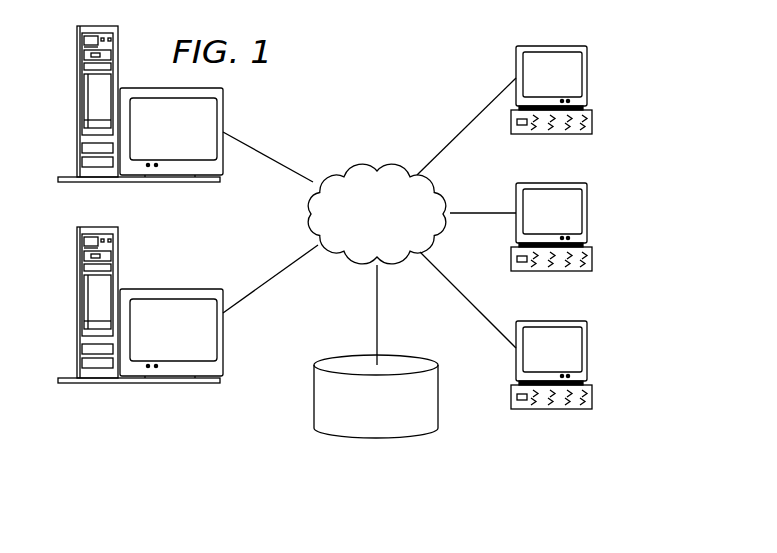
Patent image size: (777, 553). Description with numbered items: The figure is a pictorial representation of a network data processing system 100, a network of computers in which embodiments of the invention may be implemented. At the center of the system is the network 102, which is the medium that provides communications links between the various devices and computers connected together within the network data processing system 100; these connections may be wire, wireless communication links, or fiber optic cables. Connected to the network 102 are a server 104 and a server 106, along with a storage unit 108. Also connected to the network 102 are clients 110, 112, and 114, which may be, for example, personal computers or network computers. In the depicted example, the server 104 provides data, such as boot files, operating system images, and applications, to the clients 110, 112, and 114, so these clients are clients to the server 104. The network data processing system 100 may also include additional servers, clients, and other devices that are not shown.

The network data processing system 100 is at (425, 62).
The network 102 is at (348, 167).
The server 104 is at (77, 307).
The server 106 is at (77, 103).
The storage unit 108 is at (358, 438).
The client 110 is at (587, 77).
The client 112 is at (587, 213).
The client 114 is at (587, 350).